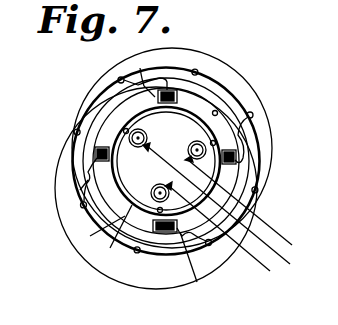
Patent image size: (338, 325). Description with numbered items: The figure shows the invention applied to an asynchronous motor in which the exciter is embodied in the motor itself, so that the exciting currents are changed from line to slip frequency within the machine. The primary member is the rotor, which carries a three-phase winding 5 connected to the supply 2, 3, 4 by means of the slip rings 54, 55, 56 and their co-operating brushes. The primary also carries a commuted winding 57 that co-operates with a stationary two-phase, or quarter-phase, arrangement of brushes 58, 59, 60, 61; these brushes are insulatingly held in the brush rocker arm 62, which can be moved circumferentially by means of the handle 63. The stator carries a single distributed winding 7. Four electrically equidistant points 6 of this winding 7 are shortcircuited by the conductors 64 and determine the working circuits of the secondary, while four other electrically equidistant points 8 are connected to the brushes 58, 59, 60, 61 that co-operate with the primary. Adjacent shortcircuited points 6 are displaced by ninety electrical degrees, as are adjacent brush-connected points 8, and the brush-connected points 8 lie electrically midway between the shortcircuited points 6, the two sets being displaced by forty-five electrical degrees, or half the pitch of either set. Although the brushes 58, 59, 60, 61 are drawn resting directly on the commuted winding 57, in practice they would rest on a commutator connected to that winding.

The supply 2 is at (245, 209).
The supply 3 is at (225, 211).
The supply 4 is at (224, 237).
The three-phase winding 5 is at (214, 122).
The shortcircuited point 6 is at (171, 165).
The single distributed winding 7 is at (101, 86).
The brush-connected point 8 is at (170, 164).
The slip ring 54 is at (193, 142).
The slip ring 55 is at (149, 133).
The slip ring 56 is at (151, 186).
The commuted winding 57 is at (110, 248).
The brush 58 is at (140, 68).
The brush 59 is at (80, 190).
The brush 60 is at (197, 282).
The brush 61 is at (236, 152).
The brush rocker arm 62 is at (90, 236).
The handle 63 is at (217, 110).
The conductor 64 is at (168, 44).